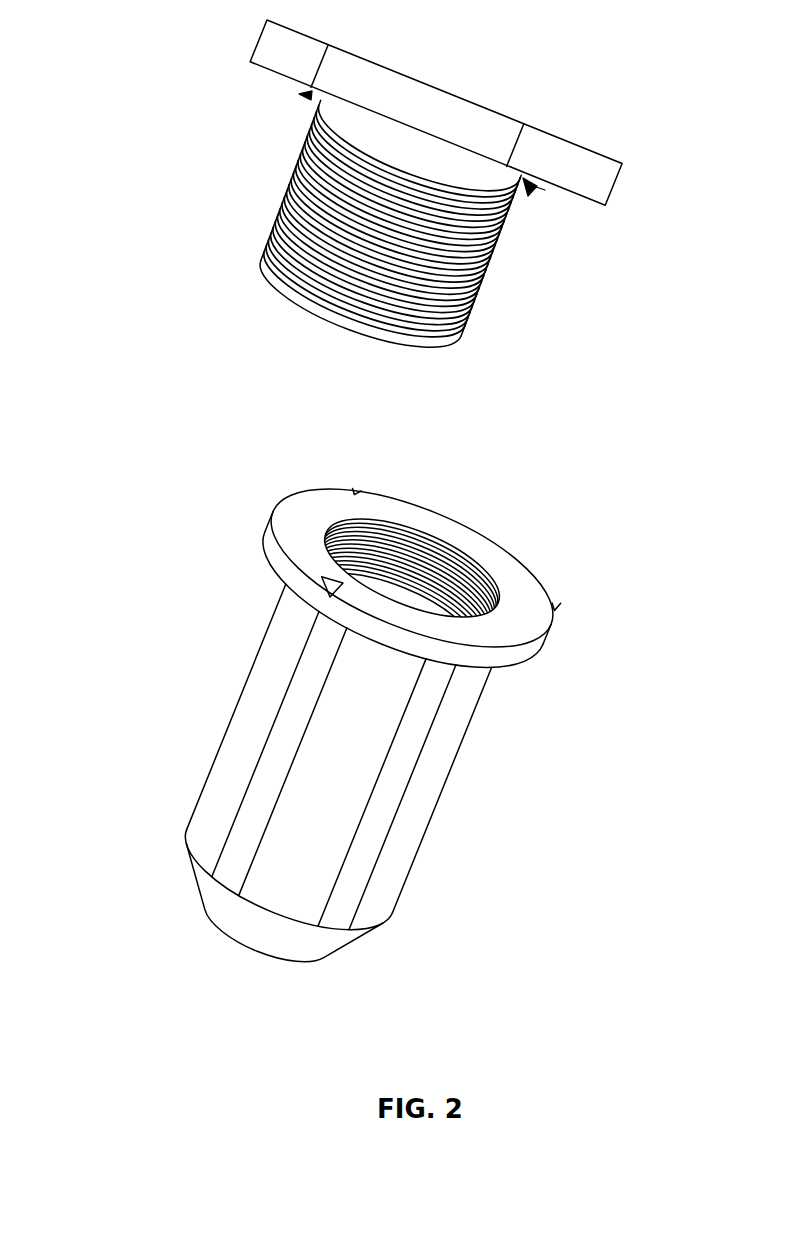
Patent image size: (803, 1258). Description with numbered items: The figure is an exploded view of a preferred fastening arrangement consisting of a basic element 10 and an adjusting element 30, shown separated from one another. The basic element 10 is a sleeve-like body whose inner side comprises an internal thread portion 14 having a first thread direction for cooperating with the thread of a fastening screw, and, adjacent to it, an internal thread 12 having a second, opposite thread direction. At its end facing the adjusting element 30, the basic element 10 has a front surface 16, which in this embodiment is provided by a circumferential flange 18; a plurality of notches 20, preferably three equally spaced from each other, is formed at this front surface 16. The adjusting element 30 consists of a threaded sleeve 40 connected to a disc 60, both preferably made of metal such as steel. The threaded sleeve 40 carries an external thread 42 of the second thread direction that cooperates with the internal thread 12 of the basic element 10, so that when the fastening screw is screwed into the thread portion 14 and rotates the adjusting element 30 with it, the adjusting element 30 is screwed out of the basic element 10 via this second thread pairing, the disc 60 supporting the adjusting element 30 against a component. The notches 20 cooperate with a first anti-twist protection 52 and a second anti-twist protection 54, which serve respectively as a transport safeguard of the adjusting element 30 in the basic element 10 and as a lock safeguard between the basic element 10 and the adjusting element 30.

The basic element 10 is at (447, 797).
The internal thread 12 is at (448, 557).
The internal thread portion 14 is at (247, 942).
The front surface 16 is at (314, 517).
The circumferential flange 18 is at (274, 546).
The notches 20 is at (558, 609).
The adjusting element 30 is at (150, 150).
The threaded sleeve 40 is at (276, 203).
The external thread 42 is at (467, 270).
The first anti-twist protection 52 is at (536, 192).
The second anti-twist protection 54 is at (300, 94).
The disc 60 is at (598, 168).